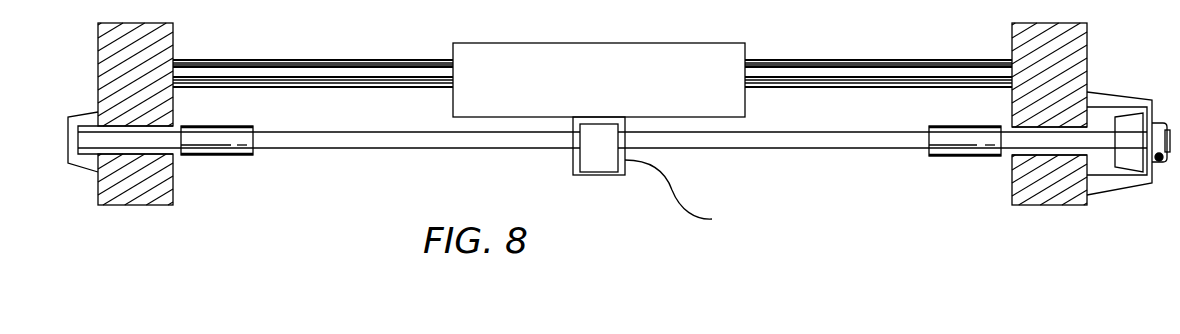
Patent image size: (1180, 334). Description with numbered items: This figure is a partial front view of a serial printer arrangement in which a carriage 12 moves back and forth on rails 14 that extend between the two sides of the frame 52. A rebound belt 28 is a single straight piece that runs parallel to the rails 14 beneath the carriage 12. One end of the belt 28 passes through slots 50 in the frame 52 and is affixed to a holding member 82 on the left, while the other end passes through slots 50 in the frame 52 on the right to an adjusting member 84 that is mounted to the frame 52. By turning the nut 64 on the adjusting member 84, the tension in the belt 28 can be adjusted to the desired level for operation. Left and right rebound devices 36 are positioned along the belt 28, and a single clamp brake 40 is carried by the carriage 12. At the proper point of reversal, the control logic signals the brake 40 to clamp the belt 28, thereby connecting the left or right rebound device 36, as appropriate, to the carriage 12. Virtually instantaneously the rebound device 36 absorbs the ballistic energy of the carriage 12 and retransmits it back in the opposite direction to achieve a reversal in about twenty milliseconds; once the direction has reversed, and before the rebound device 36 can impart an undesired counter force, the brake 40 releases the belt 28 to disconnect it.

The carriage 12 is at (612, 92).
The rails 14 is at (347, 65).
The rebound belt 28 is at (367, 143).
The rebound devices 36 is at (232, 156).
The single clamp brake 40 is at (590, 167).
The slots 50 is at (158, 153).
The frame 52 is at (166, 40).
The nut 64 is at (1165, 162).
The holding member 82 is at (84, 112).
The adjusting member 84 is at (1118, 84).